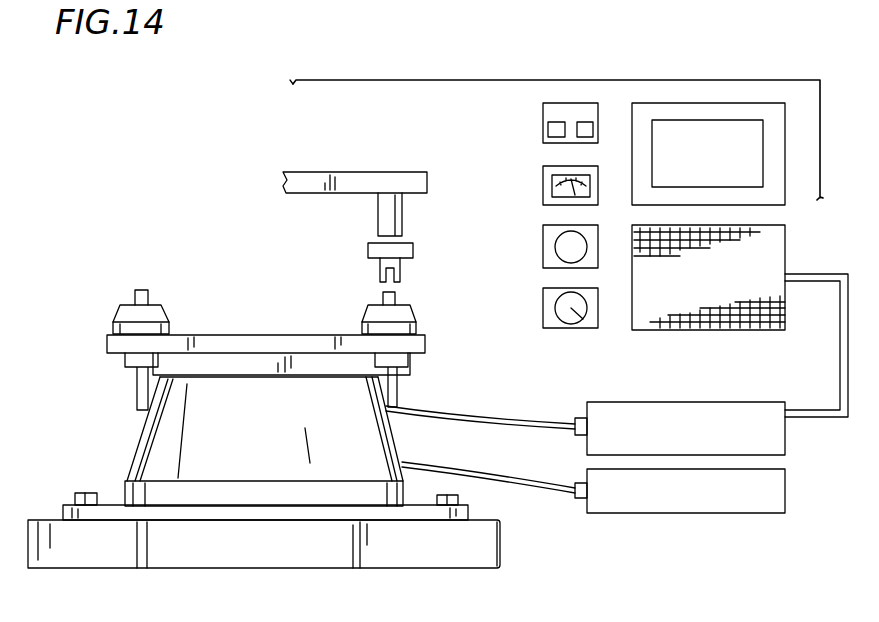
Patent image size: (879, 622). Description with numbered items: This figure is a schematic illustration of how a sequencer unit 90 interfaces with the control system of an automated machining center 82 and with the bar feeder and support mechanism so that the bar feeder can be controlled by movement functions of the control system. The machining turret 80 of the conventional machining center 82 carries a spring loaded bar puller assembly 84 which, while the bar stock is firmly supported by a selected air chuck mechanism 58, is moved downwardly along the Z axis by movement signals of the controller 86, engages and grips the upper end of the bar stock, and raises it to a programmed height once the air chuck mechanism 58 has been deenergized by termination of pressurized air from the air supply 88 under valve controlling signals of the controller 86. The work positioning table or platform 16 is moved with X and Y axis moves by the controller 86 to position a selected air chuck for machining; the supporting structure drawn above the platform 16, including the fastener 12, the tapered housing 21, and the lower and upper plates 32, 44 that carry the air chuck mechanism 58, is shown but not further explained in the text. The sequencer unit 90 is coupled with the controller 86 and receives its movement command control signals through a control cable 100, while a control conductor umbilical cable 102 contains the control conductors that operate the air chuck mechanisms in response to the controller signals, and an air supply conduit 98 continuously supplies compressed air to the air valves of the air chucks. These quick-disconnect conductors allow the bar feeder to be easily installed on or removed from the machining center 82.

The bolt 12 is at (72, 498).
The work positioning table or platform 16 is at (501, 546).
The frustoconical housing 21 is at (160, 440).
The lower plate 32 is at (213, 365).
The upper plate 44 is at (237, 340).
The air chuck mechanism 58 is at (412, 316).
The machining turret 80 is at (318, 196).
The automated machining center 82 is at (433, 71).
The spring loaded bar puller assembly 84 is at (362, 264).
The controller 86 is at (786, 250).
The air supply 88 is at (786, 500).
The sequencer unit 90 is at (786, 437).
The air supply conduit 98 is at (487, 478).
The control cable 100 is at (838, 355).
The control conductor umbilical cable 102 is at (492, 410).